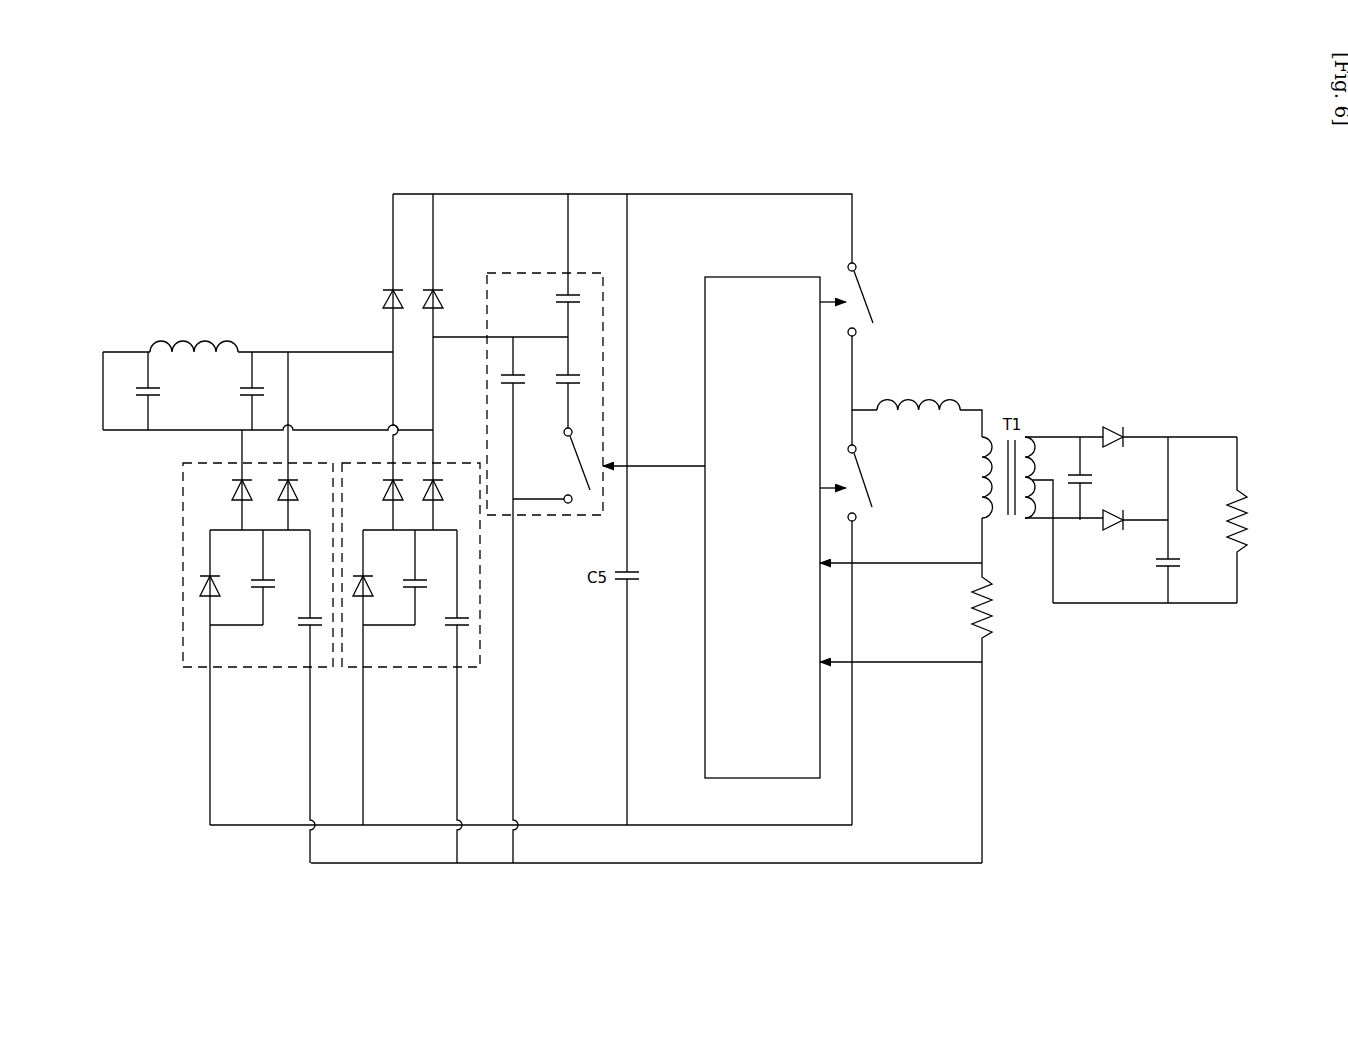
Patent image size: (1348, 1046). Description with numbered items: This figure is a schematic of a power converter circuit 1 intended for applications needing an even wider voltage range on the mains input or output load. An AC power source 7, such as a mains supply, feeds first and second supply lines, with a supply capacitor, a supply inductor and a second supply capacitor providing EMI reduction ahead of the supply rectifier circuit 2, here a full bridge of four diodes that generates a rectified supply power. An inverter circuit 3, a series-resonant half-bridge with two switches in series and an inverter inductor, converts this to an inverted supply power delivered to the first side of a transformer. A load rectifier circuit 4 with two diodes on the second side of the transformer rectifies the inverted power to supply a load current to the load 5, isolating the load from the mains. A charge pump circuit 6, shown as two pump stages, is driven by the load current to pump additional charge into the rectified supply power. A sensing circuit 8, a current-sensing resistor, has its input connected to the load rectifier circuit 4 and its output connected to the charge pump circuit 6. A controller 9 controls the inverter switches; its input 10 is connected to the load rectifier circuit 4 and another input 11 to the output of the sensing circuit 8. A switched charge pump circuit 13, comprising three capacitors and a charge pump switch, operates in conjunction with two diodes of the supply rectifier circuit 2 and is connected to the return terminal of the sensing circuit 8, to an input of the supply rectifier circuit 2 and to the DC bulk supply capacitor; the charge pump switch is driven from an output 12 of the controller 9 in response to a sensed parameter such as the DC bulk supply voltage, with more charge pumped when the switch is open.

The power converter circuit 1 is at (225, 192).
The supply rectifier circuit 2 is at (417, 183).
The inverter circuit 3 is at (925, 352).
The load rectifier circuit 4 is at (1123, 400).
The load 5 is at (1260, 500).
The charge pump circuit 6 is at (185, 672).
The AC power source 7 is at (75, 403).
The sensing circuit 8 is at (1000, 640).
The controller 9 is at (762, 527).
The input of the controller 10 is at (818, 558).
The input of the controller 11 is at (818, 668).
The output of the controller 12 is at (713, 467).
The switched charge pump circuit 13 is at (600, 270).